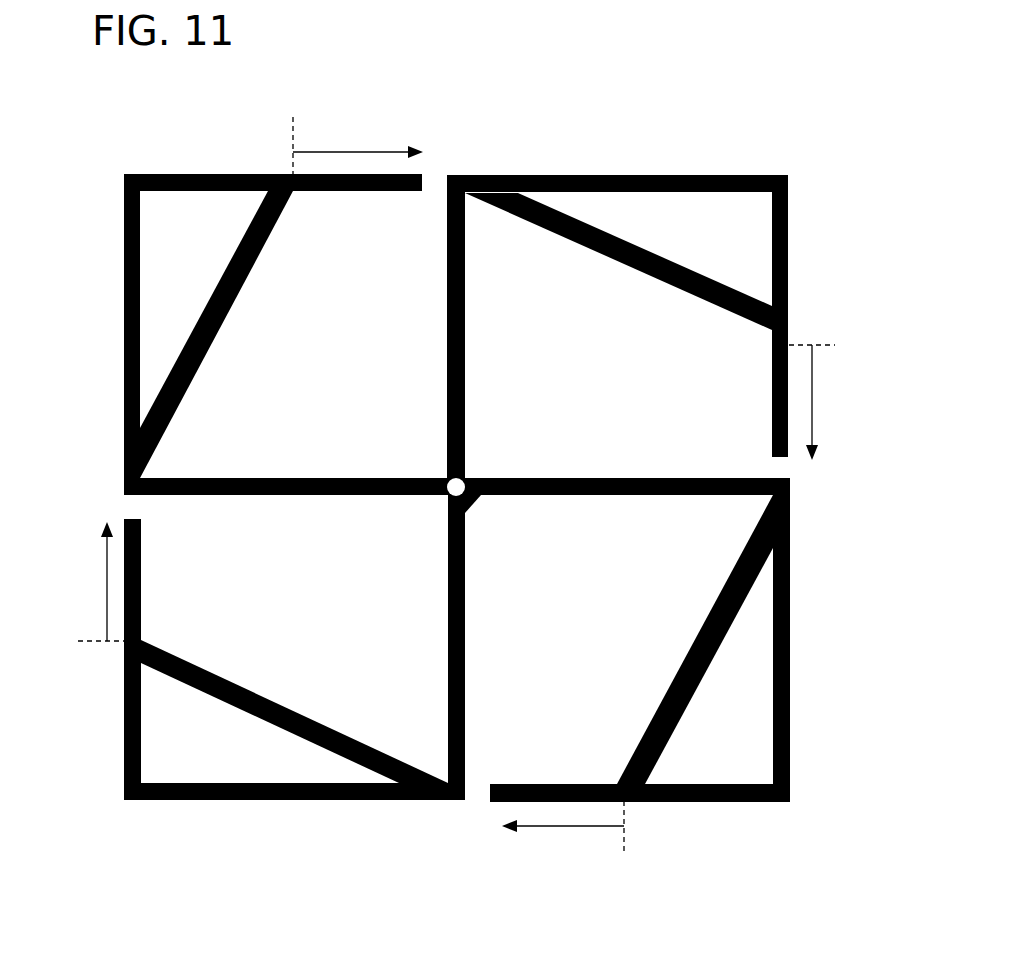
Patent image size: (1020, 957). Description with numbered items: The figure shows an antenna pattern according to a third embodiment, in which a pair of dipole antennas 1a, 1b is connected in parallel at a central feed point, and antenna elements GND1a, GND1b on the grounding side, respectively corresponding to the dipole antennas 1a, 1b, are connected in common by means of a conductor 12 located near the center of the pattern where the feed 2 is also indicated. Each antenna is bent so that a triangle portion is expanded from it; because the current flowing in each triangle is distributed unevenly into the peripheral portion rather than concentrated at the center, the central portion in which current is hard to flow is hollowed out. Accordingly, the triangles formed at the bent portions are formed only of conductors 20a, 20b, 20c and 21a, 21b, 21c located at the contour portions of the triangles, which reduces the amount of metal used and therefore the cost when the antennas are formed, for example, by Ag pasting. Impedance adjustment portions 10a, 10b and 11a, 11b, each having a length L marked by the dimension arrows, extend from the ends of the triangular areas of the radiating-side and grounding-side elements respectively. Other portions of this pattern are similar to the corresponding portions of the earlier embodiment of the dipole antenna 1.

The dipole antenna 1 is at (456, 487).
The feeding point 2 is at (450, 487).
The dipole antenna 1a is at (253, 304).
The dipole antenna 1b is at (642, 307).
The impedance adjustment portion 10a is at (381, 192).
The impedance adjustment portion 10b is at (772, 402).
The impedance adjustment portion 11a is at (560, 785).
The impedance adjustment portion 11b is at (141, 578).
The conductor 12 is at (478, 497).
The conductor 20a is at (190, 175).
The conductor 20b is at (235, 300).
The conductor 20c is at (125, 313).
The conductor 21a is at (742, 801).
The conductor 21b is at (685, 660).
The conductor 21c is at (790, 700).
The antenna element on the grounding side GND1a is at (673, 692).
The antenna element on the grounding side GND1b is at (265, 687).